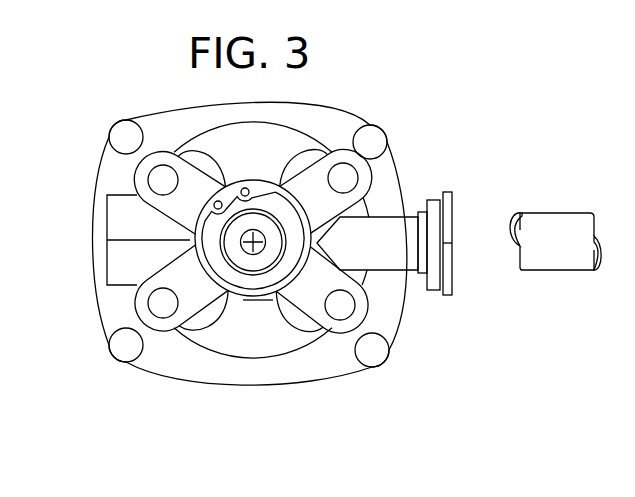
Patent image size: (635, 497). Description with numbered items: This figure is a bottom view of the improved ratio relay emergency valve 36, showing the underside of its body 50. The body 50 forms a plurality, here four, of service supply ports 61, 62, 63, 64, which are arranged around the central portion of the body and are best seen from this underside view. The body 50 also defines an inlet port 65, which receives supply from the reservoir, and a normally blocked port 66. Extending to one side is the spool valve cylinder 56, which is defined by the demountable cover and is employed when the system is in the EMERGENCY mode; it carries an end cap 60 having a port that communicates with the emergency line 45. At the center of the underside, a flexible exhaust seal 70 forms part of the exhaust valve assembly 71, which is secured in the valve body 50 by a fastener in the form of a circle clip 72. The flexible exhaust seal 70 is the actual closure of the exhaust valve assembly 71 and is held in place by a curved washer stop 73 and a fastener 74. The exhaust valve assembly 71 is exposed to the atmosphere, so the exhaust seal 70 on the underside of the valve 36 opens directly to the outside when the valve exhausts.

The ratio relay emergency valve 36 is at (238, 104).
The emergency line 45 is at (541, 214).
The body 50 is at (399, 292).
The spool valve cylinder 56 is at (431, 200).
The end cap 60 is at (450, 218).
The service supply port 61 is at (168, 168).
The service supply port 62 is at (342, 168).
The service supply port 63 is at (150, 304).
The service supply port 64 is at (354, 313).
The inlet port 65 is at (107, 271).
The normally blocked port 66 is at (422, 212).
The flexible exhaust seal 70 is at (247, 288).
The exhaust valve assembly 71 is at (192, 237).
The circle clip 72 is at (188, 229).
The curved washer stop 73 is at (256, 272).
The fastener 74 is at (262, 250).